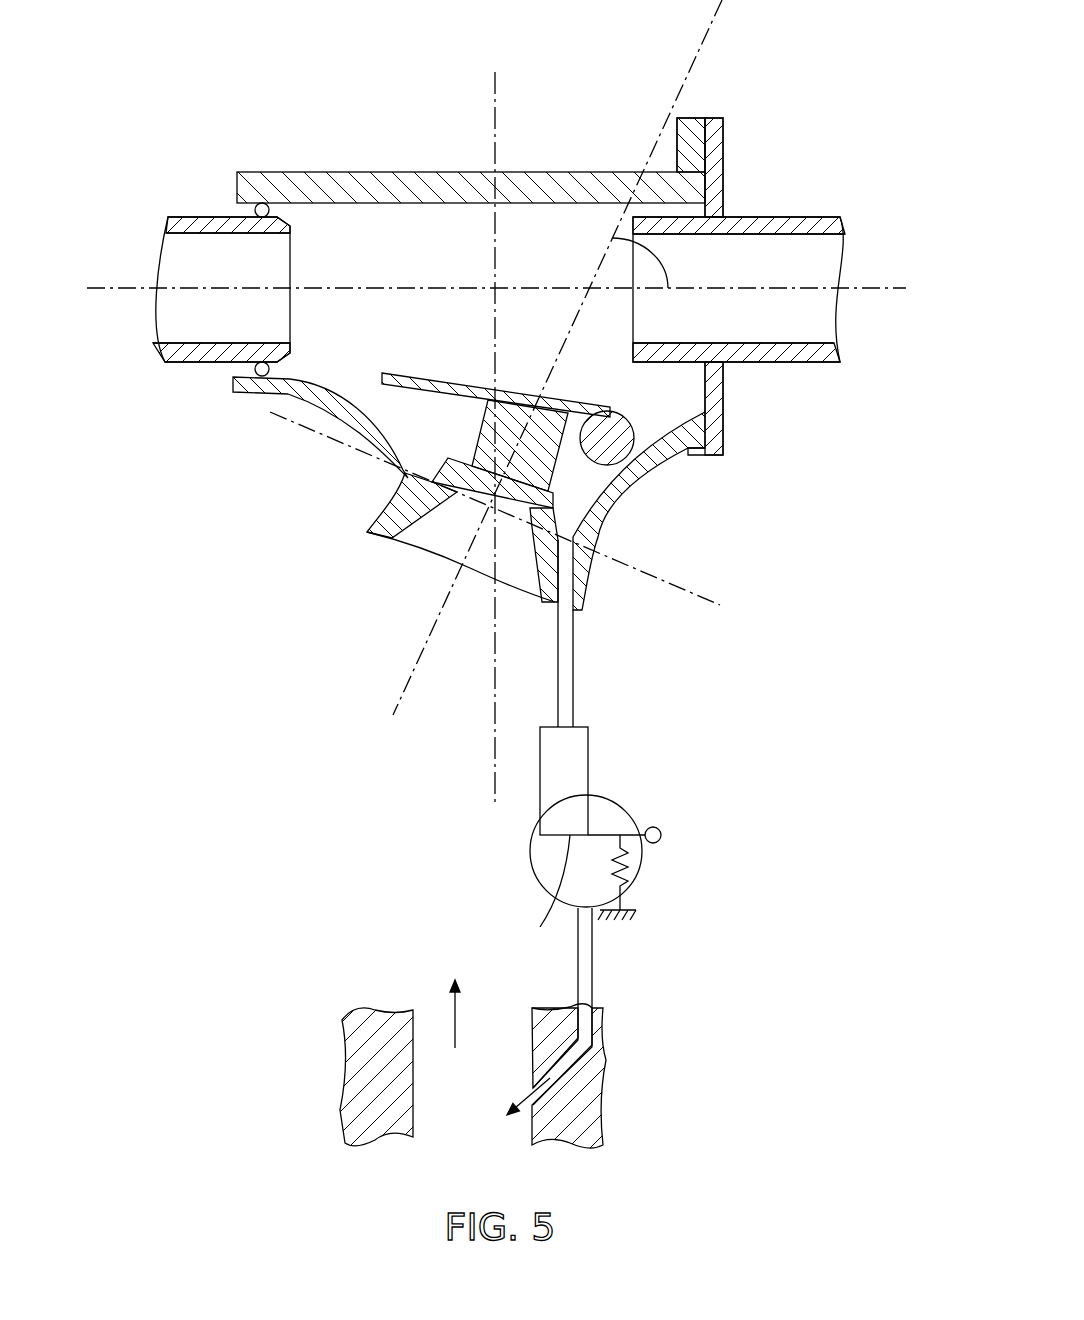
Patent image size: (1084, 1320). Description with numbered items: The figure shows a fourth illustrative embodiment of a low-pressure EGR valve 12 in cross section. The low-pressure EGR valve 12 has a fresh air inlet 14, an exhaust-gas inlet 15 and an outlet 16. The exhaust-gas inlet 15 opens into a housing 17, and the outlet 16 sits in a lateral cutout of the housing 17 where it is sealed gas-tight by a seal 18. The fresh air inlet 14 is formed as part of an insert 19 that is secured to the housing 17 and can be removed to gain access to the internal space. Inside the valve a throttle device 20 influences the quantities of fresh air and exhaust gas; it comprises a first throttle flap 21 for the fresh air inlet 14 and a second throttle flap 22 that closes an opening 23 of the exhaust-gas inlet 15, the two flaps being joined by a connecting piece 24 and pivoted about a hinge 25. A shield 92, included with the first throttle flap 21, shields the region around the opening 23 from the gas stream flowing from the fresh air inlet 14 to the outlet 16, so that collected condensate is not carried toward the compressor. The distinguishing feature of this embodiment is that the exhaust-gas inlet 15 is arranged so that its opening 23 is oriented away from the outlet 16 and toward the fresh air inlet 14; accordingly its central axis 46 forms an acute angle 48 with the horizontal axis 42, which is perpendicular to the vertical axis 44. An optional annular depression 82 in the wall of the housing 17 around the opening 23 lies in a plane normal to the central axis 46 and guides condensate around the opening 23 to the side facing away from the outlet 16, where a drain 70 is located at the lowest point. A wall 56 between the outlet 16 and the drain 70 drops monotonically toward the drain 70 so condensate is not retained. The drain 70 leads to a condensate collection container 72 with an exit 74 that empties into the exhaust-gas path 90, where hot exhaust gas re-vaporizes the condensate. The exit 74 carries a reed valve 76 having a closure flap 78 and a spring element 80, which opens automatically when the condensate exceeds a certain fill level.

The low-pressure EGR valve 12 is at (548, 90).
The fresh air inlet 14 is at (795, 242).
The exhaust-gas inlet 15 is at (513, 582).
The outlet 16 is at (160, 322).
The housing 17 is at (566, 183).
The seal 18 is at (255, 207).
The insert 19 is at (715, 145).
The throttle device 20 is at (428, 316).
The first throttle flap 21 is at (402, 376).
The second throttle flap 22 is at (550, 488).
The opening 23 is at (431, 548).
The connecting piece 24 is at (510, 400).
The hinge 25 is at (622, 420).
The horizontal axis 42 is at (885, 283).
The vertical axis 44 is at (488, 120).
The central axis 46 is at (705, 42).
The acute angle 48 is at (663, 265).
The wall 56 is at (323, 256).
The drain 70 is at (590, 523).
The condensate collection container 72 is at (590, 760).
The exit 74 is at (593, 975).
The reed valve 76 is at (530, 855).
The closure flap 78 is at (548, 896).
The spring element 80 is at (630, 870).
The depression 82 is at (432, 462).
The exhaust-gas path 90 is at (423, 1088).
The shield 92 is at (433, 345).